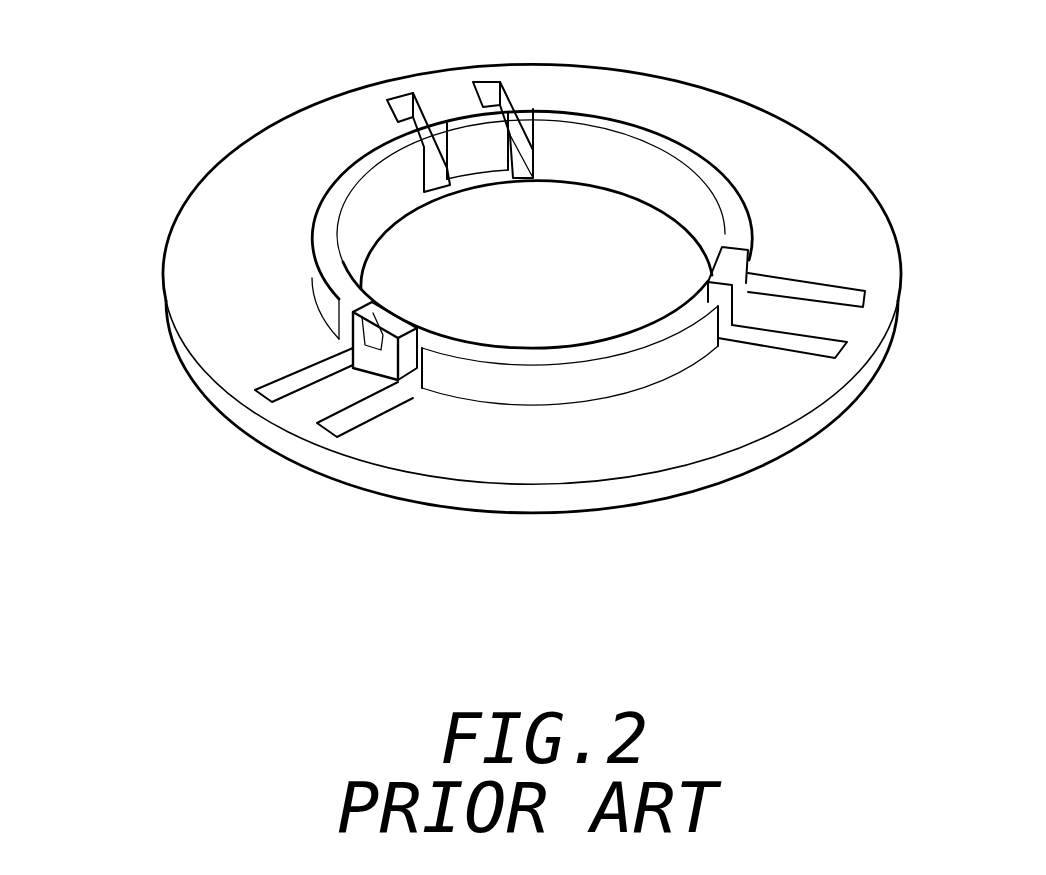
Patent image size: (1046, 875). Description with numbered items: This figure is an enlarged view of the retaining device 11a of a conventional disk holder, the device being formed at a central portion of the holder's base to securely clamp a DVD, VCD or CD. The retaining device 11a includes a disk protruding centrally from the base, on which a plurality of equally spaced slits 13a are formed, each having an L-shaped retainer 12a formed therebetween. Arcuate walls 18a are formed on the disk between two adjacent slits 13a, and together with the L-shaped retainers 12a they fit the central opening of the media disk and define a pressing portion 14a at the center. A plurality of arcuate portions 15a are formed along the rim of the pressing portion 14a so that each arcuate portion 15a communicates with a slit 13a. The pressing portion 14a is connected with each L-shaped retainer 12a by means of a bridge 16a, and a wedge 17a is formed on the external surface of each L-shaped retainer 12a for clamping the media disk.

The retaining device 11a is at (226, 116).
The L-shaped retainer 12a is at (310, 398).
The slit 13a is at (297, 374).
The pressing portion 14a is at (598, 205).
The arcuate portion 15a is at (360, 268).
The bridge 16a is at (485, 180).
The wedge 17a is at (367, 340).
The arcuate wall 18a is at (700, 163).